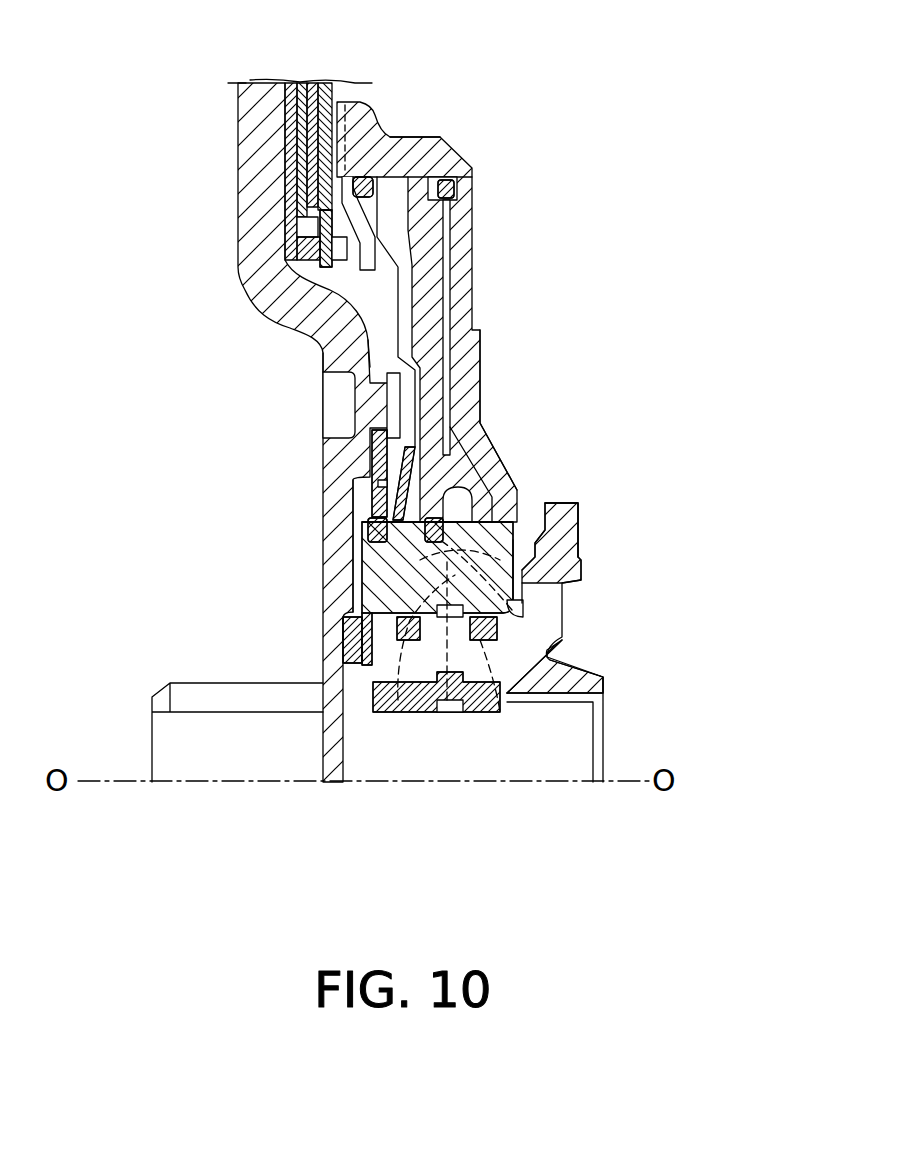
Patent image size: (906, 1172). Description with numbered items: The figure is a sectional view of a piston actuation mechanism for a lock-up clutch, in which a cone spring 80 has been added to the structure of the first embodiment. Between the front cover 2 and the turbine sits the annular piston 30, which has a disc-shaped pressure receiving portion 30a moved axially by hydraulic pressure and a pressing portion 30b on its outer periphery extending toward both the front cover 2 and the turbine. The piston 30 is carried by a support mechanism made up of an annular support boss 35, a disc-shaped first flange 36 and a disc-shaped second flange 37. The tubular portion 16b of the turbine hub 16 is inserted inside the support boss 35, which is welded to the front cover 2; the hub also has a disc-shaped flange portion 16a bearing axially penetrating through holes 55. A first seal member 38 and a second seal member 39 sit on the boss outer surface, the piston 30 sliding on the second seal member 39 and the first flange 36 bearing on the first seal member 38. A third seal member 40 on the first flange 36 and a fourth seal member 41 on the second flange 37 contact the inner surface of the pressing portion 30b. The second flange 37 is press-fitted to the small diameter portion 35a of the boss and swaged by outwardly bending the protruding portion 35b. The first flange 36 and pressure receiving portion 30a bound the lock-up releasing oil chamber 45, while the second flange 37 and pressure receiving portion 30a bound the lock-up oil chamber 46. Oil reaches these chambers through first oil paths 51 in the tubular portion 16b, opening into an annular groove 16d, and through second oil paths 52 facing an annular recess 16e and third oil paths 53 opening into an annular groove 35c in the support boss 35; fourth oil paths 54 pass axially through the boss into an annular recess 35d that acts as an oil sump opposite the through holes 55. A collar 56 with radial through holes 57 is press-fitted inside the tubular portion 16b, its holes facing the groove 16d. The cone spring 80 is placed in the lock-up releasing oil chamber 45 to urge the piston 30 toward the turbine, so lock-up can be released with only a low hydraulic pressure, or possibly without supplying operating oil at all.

The front cover 2 is at (252, 211).
The turbine hub 16 is at (590, 572).
The flange portion 16a is at (560, 512).
The tubular portion 16b is at (585, 675).
The annular groove 16d is at (410, 712).
The annular recess 16e is at (360, 612).
The piston 30 is at (470, 135).
The pressure receiving portion 30a is at (473, 262).
The pressing portion 30b is at (417, 140).
The support boss 35 is at (372, 552).
The small diameter portion 35a is at (540, 537).
The protruding portion 35b is at (545, 547).
The annular groove 35c is at (372, 668).
The annular recess 35d is at (567, 600).
The first flange 36 is at (345, 335).
The second flange 37 is at (465, 380).
The first seal member 38 is at (356, 547).
The second seal member 39 is at (420, 500).
The third seal member 40 is at (340, 165).
The fourth seal member 41 is at (457, 190).
The lock-up releasing oil chamber 45 is at (380, 372).
The lock-up oil chamber 46 is at (447, 303).
The first oil paths 51 is at (398, 700).
The second oil paths 52 is at (450, 525).
The third oil paths 53 is at (560, 588).
The fourth oil paths 54 is at (512, 610).
The through holes 55 is at (575, 620).
The collar 56 is at (488, 712).
The through holes 57 is at (447, 700).
The cone spring 80 is at (380, 450).